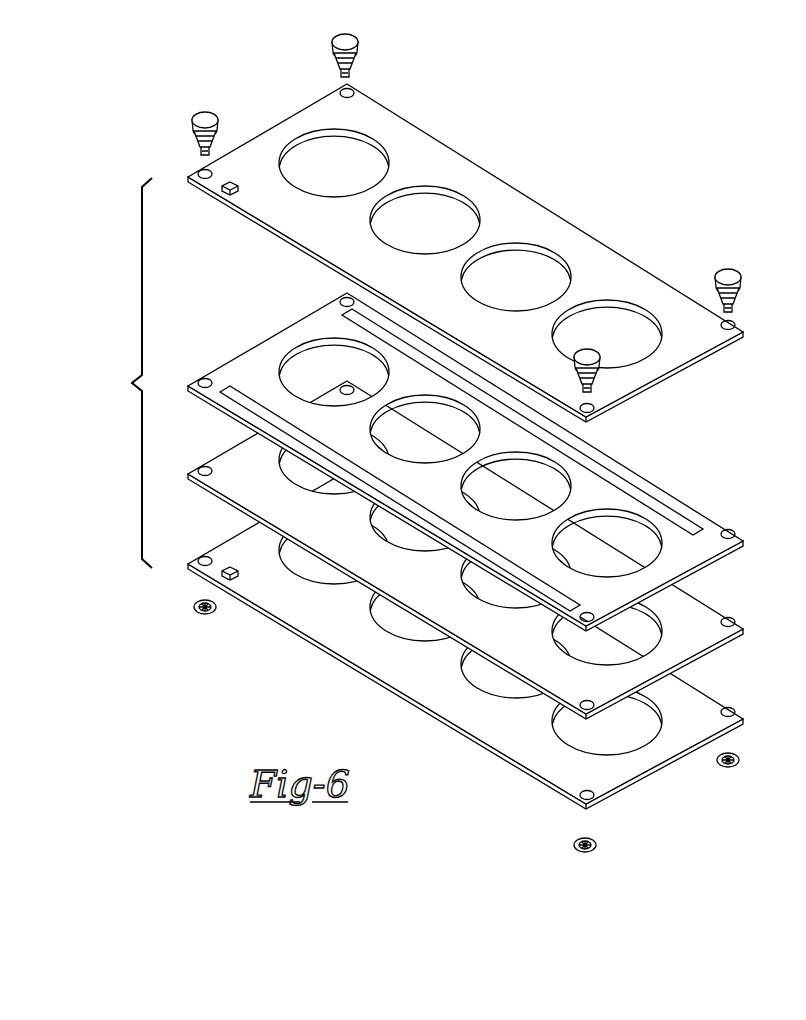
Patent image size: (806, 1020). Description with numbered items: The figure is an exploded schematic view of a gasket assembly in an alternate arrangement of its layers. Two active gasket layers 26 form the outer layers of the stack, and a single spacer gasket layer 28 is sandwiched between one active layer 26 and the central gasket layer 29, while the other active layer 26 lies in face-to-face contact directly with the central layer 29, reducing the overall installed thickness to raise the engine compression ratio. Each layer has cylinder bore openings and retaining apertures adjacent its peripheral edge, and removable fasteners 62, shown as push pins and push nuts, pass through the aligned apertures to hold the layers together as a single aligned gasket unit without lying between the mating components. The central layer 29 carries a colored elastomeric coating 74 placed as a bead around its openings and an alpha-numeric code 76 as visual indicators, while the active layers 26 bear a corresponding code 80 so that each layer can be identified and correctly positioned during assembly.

The active gasket layer 26 is at (560, 217).
The spacer gasket layer 28 is at (222, 460).
The central gasket layer 29 is at (668, 492).
The removable fastener 62 is at (727, 279).
The elastomeric coating 74 is at (352, 311).
The alpha-numeric code 76 is at (684, 552).
The alpha-numeric code 80 is at (238, 184).